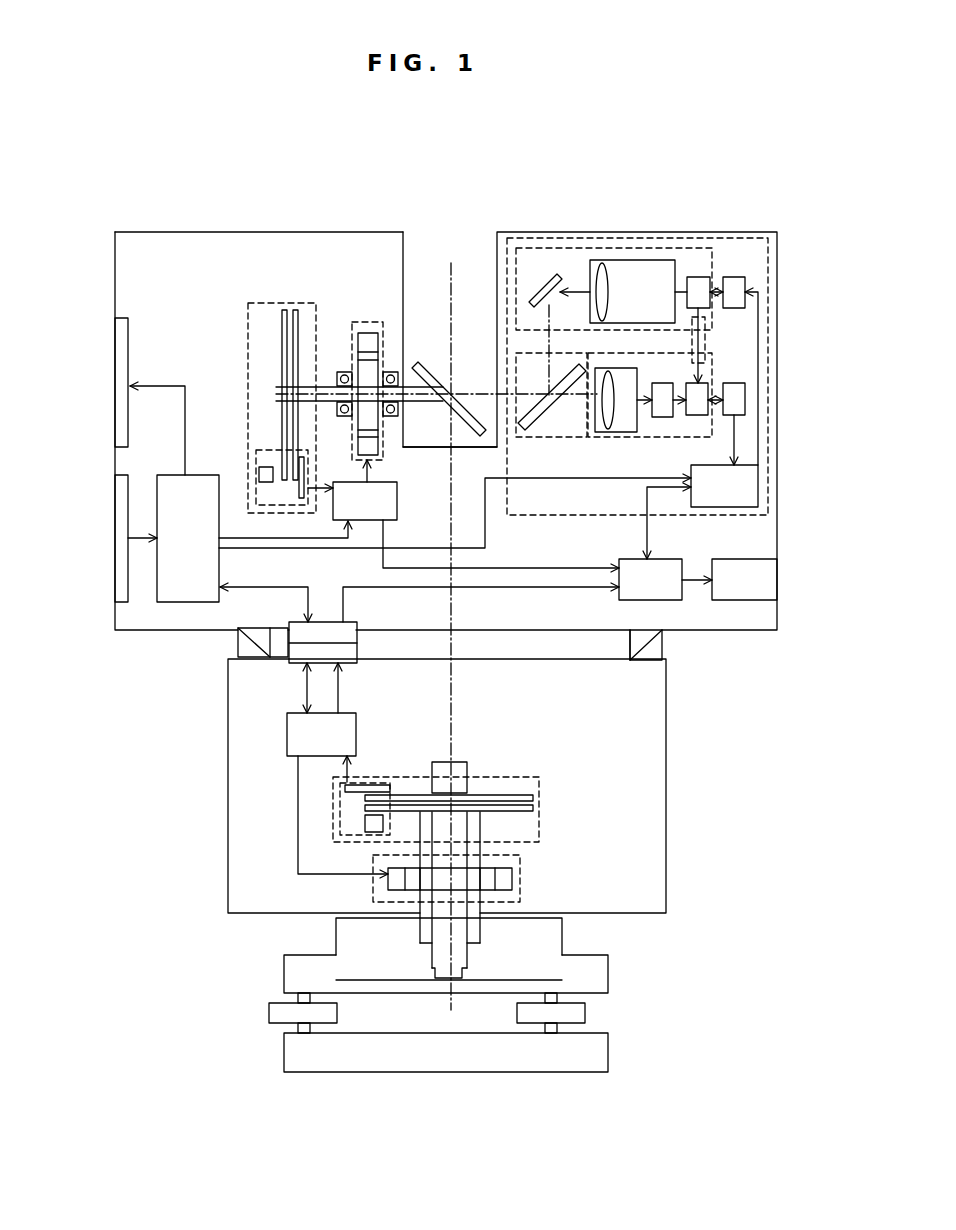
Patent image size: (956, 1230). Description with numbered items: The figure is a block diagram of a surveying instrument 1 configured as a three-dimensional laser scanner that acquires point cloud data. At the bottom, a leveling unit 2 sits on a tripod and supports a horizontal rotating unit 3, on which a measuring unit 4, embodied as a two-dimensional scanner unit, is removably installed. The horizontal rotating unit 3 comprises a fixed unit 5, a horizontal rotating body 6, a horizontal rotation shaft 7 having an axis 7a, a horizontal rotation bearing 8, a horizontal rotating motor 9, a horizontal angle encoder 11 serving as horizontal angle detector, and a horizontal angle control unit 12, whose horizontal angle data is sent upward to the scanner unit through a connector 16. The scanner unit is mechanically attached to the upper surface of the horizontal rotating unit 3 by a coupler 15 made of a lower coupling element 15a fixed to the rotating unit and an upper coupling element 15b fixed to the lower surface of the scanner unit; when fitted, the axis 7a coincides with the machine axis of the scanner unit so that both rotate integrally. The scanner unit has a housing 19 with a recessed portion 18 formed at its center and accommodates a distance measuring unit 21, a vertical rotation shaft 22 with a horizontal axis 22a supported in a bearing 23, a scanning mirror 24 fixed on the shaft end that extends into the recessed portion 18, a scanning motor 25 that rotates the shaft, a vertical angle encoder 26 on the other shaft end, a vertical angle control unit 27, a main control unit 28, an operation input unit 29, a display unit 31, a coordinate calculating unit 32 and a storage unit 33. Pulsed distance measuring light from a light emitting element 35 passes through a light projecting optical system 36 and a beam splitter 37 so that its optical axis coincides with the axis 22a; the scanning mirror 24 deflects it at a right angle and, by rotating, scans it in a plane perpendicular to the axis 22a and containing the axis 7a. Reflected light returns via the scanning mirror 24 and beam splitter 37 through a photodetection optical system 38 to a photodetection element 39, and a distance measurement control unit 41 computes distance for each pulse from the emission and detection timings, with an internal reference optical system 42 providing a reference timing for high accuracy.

The surveying instrument 1 is at (312, 173).
The leveling unit 2 is at (608, 972).
The horizontal rotating unit 3 is at (670, 793).
The measuring unit 4 is at (325, 228).
The fixed unit 5 is at (562, 933).
The horizontal rotating body 6 is at (666, 848).
The horizontal rotation shaft 7 is at (468, 790).
The axis 7a is at (543, 835).
The horizontal rotation bearing 8 is at (480, 933).
The horizontal rotating motor 9 is at (522, 875).
The horizontal angle encoder 11 is at (543, 807).
The horizontal angle control unit 12 is at (287, 737).
The coupler 15 is at (237, 643).
The lower coupling element 15a is at (662, 645).
The upper coupling element 15b is at (630, 640).
The connector 16 is at (357, 622).
The recessed portion 18 is at (468, 240).
The housing 19 is at (218, 231).
The distance measuring unit 21 is at (568, 238).
The vertical rotation shaft 22 is at (408, 404).
The horizontal axis 22a is at (275, 390).
The bearing 23 is at (338, 372).
The scanning mirror 24 is at (436, 363).
The scanning motor 25 is at (368, 320).
The vertical angle encoder 26 is at (280, 302).
The vertical angle control unit 27 is at (398, 512).
The main control unit 28 is at (200, 475).
The operation input unit 29 is at (115, 552).
The display unit 31 is at (115, 380).
The coordinate calculating unit 32 is at (630, 559).
The storage unit 33 is at (758, 559).
The light emitting element 35 is at (737, 277).
The light projecting optical system 36 is at (628, 247).
The beam splitter 37 is at (527, 437).
The photodetection optical system 38 is at (620, 437).
The photodetection element 39 is at (746, 398).
The distance measurement control unit 41 is at (758, 465).
The internal reference optical system 42 is at (706, 343).